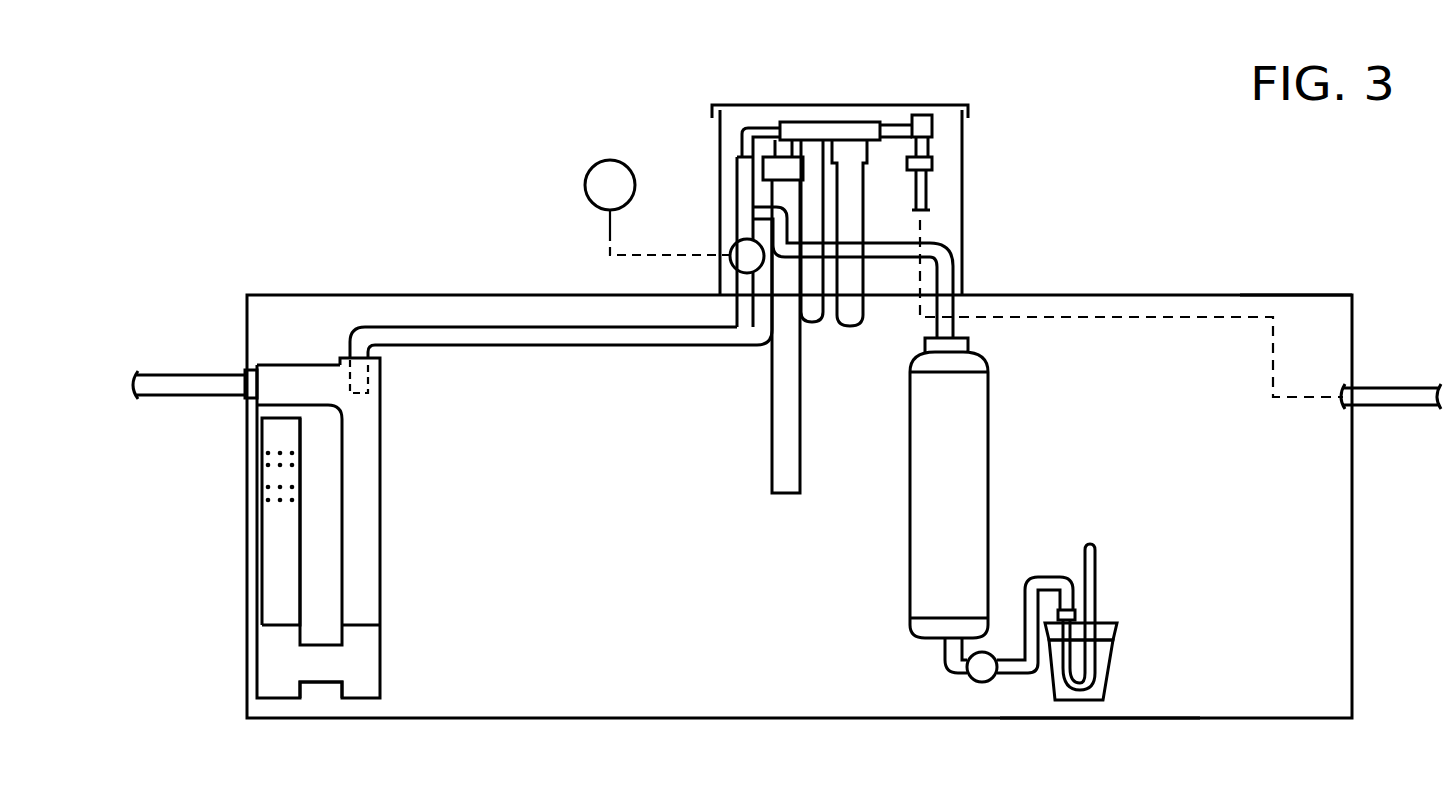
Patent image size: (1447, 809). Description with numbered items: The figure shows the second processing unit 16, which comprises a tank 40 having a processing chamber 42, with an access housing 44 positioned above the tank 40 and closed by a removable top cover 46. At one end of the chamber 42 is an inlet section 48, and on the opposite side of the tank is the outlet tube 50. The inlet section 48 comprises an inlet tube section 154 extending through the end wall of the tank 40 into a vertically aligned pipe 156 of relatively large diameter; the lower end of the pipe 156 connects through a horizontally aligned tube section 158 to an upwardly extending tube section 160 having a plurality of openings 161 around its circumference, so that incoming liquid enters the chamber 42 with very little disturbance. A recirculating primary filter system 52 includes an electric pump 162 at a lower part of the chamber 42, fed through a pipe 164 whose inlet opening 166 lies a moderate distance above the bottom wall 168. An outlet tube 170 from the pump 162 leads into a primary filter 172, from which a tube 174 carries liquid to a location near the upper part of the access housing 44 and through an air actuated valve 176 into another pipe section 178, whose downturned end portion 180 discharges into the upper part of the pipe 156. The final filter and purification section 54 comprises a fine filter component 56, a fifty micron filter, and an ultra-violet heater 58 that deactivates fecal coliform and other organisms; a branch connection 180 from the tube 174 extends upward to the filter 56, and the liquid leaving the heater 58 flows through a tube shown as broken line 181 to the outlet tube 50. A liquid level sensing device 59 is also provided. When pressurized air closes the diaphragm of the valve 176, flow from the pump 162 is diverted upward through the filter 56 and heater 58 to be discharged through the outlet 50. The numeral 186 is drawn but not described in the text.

The second processing unit 16 is at (1249, 203).
The tank 40 is at (1240, 294).
The processing chamber 42 is at (1288, 313).
The access housing 44 is at (968, 149).
The removable top cover 46 is at (866, 104).
The inlet section 48 is at (390, 490).
The outlet tube 50 is at (1387, 392).
The recirculating primary filter system 52 is at (1029, 542).
The final filter and purification section 54 is at (967, 203).
The fine filter component 56 is at (814, 323).
The ultra-violet heater 58 is at (852, 326).
The liquid level sensing device 59 is at (770, 432).
The inlet tube section 154 is at (278, 373).
The vertically aligned pipe 156 is at (367, 555).
The horizontally aligned tube section 158 is at (313, 673).
The upwardly extending tube section 160 is at (272, 548).
The openings 161 is at (266, 487).
The electric pump 162 is at (1087, 686).
The pipe 164 is at (1092, 582).
The inlet opening 166 is at (1097, 547).
The bottom wall 168 is at (1100, 720).
The outlet tube 170 is at (957, 672).
The primary filter 172 is at (922, 515).
The tube 174 is at (903, 250).
The air actuated valve 176 is at (732, 266).
The pipe section 178 is at (588, 348).
The downturned end portion 180 is at (741, 185).
The tube 181 is at (1270, 352).
The inlet port 186 is at (364, 394).